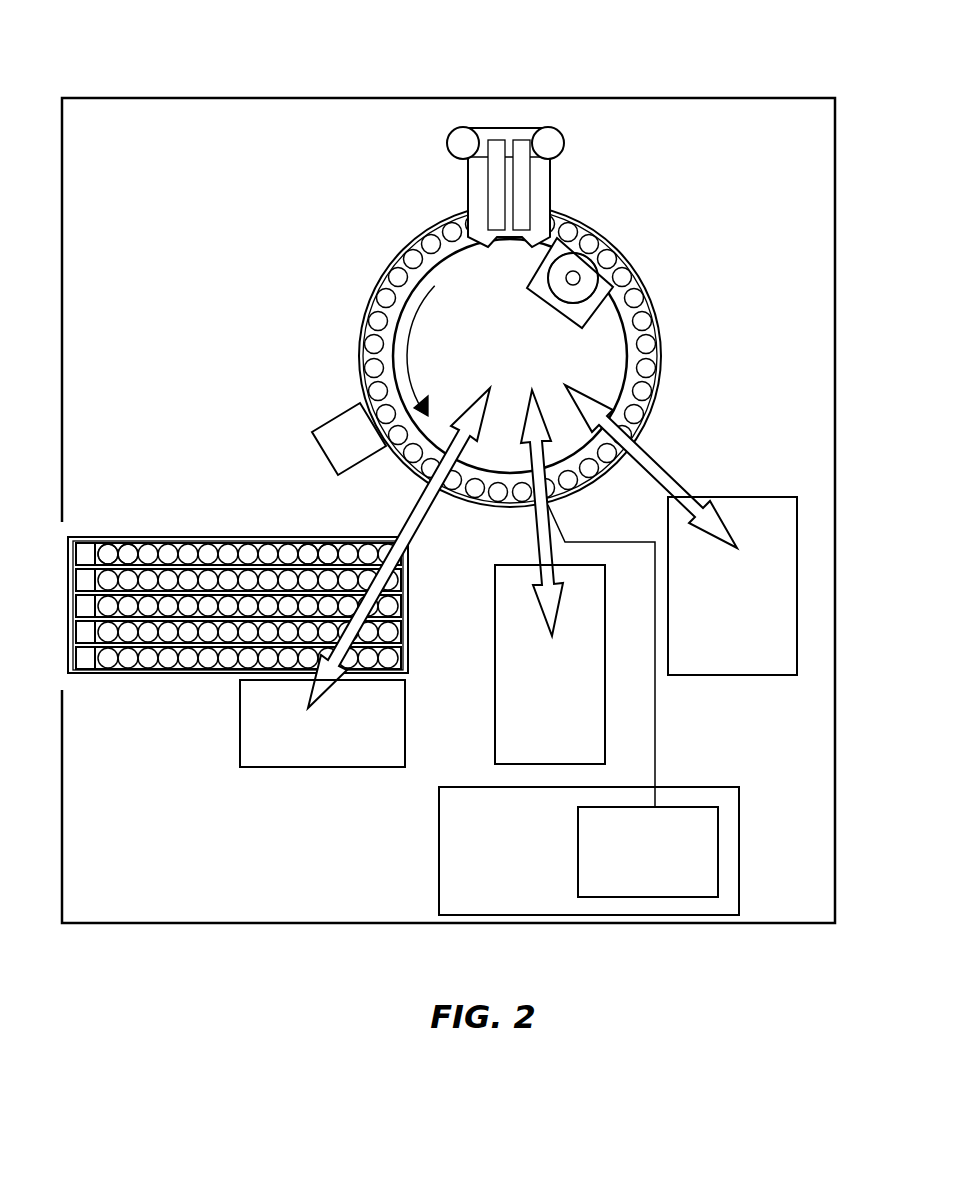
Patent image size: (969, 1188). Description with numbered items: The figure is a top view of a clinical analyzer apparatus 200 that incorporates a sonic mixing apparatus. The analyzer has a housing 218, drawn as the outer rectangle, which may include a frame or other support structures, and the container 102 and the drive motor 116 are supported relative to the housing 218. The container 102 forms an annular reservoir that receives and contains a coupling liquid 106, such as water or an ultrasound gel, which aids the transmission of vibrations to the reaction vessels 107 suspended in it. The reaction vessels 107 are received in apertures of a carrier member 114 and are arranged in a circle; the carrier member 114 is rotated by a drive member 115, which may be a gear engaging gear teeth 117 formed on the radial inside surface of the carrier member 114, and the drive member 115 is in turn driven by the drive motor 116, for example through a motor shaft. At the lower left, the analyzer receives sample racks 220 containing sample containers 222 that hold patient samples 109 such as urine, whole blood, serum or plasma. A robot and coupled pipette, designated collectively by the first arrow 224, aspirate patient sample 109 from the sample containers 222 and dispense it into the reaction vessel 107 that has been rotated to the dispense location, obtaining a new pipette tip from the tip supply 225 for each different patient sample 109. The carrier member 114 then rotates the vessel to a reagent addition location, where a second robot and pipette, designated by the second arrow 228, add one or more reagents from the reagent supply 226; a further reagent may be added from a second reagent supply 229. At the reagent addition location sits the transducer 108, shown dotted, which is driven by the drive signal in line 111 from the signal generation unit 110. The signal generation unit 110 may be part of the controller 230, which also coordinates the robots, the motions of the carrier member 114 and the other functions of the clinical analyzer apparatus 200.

The clinical analyzer apparatus 200 is at (362, 74).
The housing 218 is at (590, 98).
The coupling liquid 106 is at (447, 147).
The reaction vessel 107 is at (400, 262).
The carrier member 114 is at (660, 270).
The container 102 is at (662, 353).
The drive motor 116 is at (543, 263).
The drive member 115 is at (325, 400).
The gear teeth 117 is at (630, 333).
The sample rack 220 is at (262, 528).
The sample containers 222 is at (249, 538).
The patient sample 109 is at (332, 548).
The first arrow 224 is at (412, 512).
The second arrow 228 is at (530, 530).
The tip supply 225 is at (322, 723).
The reagent supply 226 is at (550, 664).
The second reagent supply 229 is at (681, 530).
The transducer 108 is at (523, 498).
The line 111 is at (657, 724).
The signal generation unit 110 is at (718, 845).
The controller 230 is at (439, 855).